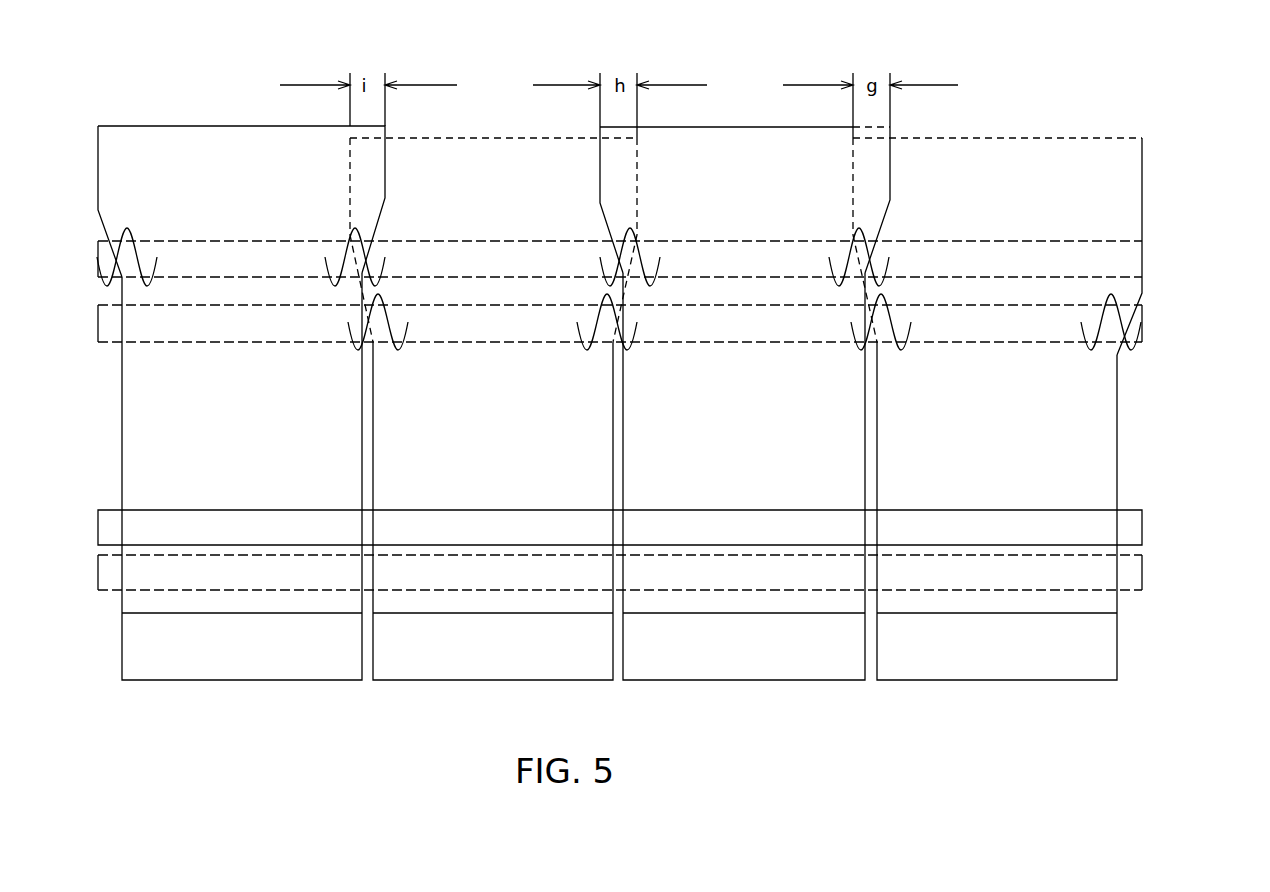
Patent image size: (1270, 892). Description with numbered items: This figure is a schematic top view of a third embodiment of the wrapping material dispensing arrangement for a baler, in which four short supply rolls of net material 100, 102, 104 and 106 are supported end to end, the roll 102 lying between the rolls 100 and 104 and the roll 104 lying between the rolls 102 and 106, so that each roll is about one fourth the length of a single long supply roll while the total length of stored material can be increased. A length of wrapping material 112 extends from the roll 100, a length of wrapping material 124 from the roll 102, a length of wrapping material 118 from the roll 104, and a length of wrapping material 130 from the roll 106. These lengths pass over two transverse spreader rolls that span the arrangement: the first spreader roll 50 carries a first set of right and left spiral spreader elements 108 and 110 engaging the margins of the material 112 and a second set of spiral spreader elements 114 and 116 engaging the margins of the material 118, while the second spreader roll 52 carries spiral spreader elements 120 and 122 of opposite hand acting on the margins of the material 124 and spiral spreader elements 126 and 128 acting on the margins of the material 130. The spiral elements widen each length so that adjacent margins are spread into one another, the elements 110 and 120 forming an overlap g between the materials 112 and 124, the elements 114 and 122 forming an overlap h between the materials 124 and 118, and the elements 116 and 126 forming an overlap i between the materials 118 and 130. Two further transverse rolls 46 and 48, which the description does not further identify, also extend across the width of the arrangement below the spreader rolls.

The band 46 is at (1142, 565).
The band 48 is at (1142, 530).
The first spreader roll 50 is at (1145, 312).
The second spreader roll 52 is at (1118, 241).
The supply roll of net material 100 is at (1045, 682).
The supply roll of net material 102 is at (787, 682).
The supply roll of net material 104 is at (418, 682).
The supply roll of net material 106 is at (183, 682).
The right spiral spreader element 108 is at (1087, 350).
The left spiral spreader element 110 is at (905, 345).
The length of wrapping material 112 is at (1055, 138).
The right spiral spreader element 114 is at (590, 355).
The left spiral spreader element 116 is at (408, 345).
The length of wrapping material 118 is at (490, 138).
The right spiral spreader element 120 is at (868, 227).
The left spiral spreader element 122 is at (627, 230).
The length of wrapping material 124 is at (757, 127).
The right spiral spreader element 126 is at (358, 230).
The left spiral spreader element 128 is at (133, 230).
The length of wrapping material 130 is at (197, 126).